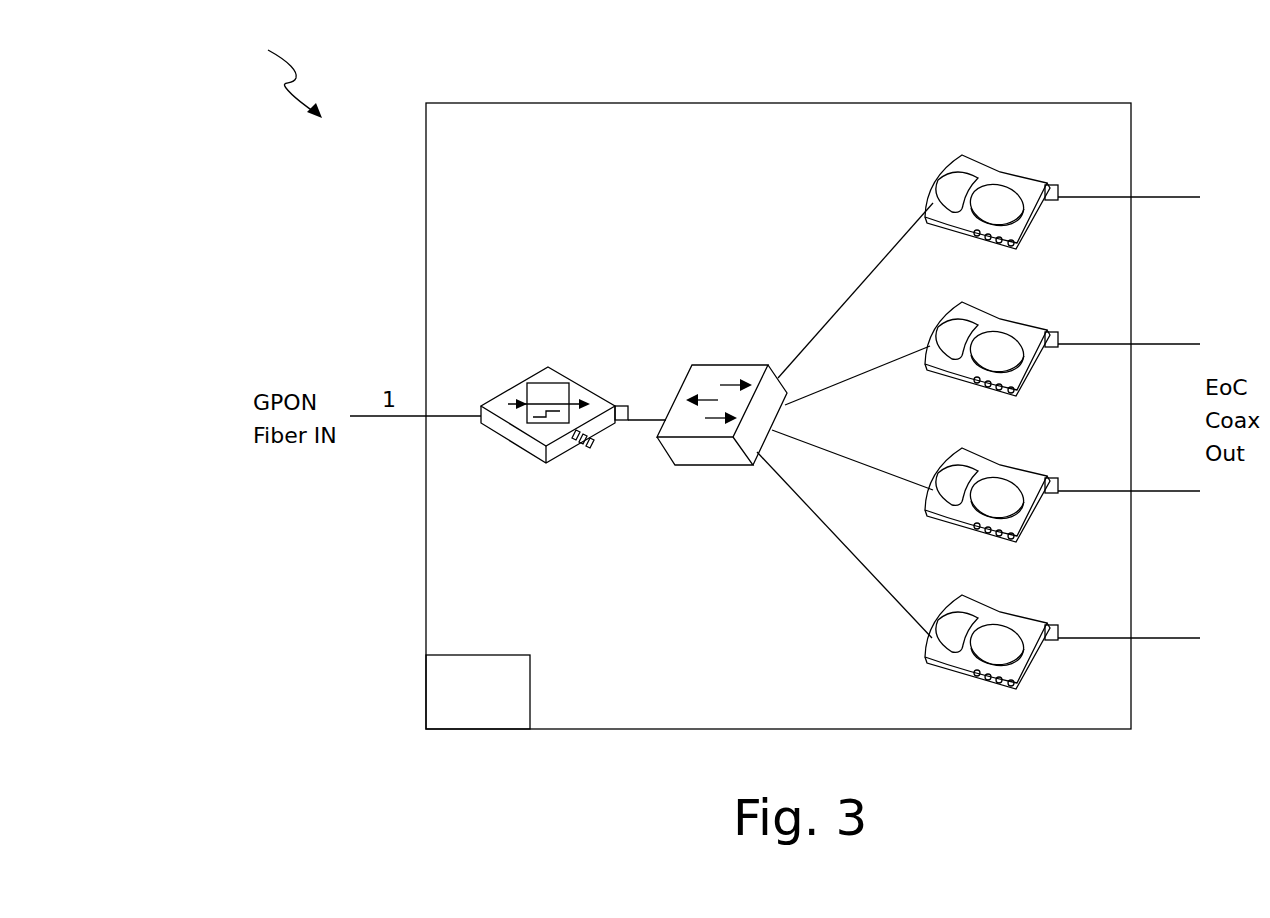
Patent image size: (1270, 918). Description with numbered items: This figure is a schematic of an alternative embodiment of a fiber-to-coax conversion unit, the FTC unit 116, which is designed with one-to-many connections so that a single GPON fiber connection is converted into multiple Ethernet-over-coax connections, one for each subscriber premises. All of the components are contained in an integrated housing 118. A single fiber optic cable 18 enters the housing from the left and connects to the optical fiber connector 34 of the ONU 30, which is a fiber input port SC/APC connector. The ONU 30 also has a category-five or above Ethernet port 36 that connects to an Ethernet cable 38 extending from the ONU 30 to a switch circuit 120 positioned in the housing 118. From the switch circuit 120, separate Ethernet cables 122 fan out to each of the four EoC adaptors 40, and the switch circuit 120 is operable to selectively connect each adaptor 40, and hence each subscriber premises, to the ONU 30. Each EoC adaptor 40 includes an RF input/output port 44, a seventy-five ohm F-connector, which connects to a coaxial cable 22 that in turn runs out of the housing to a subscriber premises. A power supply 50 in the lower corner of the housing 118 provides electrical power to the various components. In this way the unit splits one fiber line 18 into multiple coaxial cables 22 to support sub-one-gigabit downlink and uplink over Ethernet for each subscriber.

The FTC unit 116 is at (276, 75).
The housing 118 is at (697, 103).
The fiber optic cable 18 is at (368, 416).
The optical fiber connector 34 is at (481, 408).
The ONU 30 is at (548, 367).
The Ethernet port 36 is at (622, 406).
The Ethernet cable 38 is at (642, 420).
The switch circuit 120 is at (715, 465).
The Ethernet cable 122 is at (845, 545).
The EoC adaptor 40 is at (1018, 183).
The RF input/output port 44 is at (1059, 188).
The coaxial cable 22 is at (1184, 197).
The power supply 50 is at (530, 702).